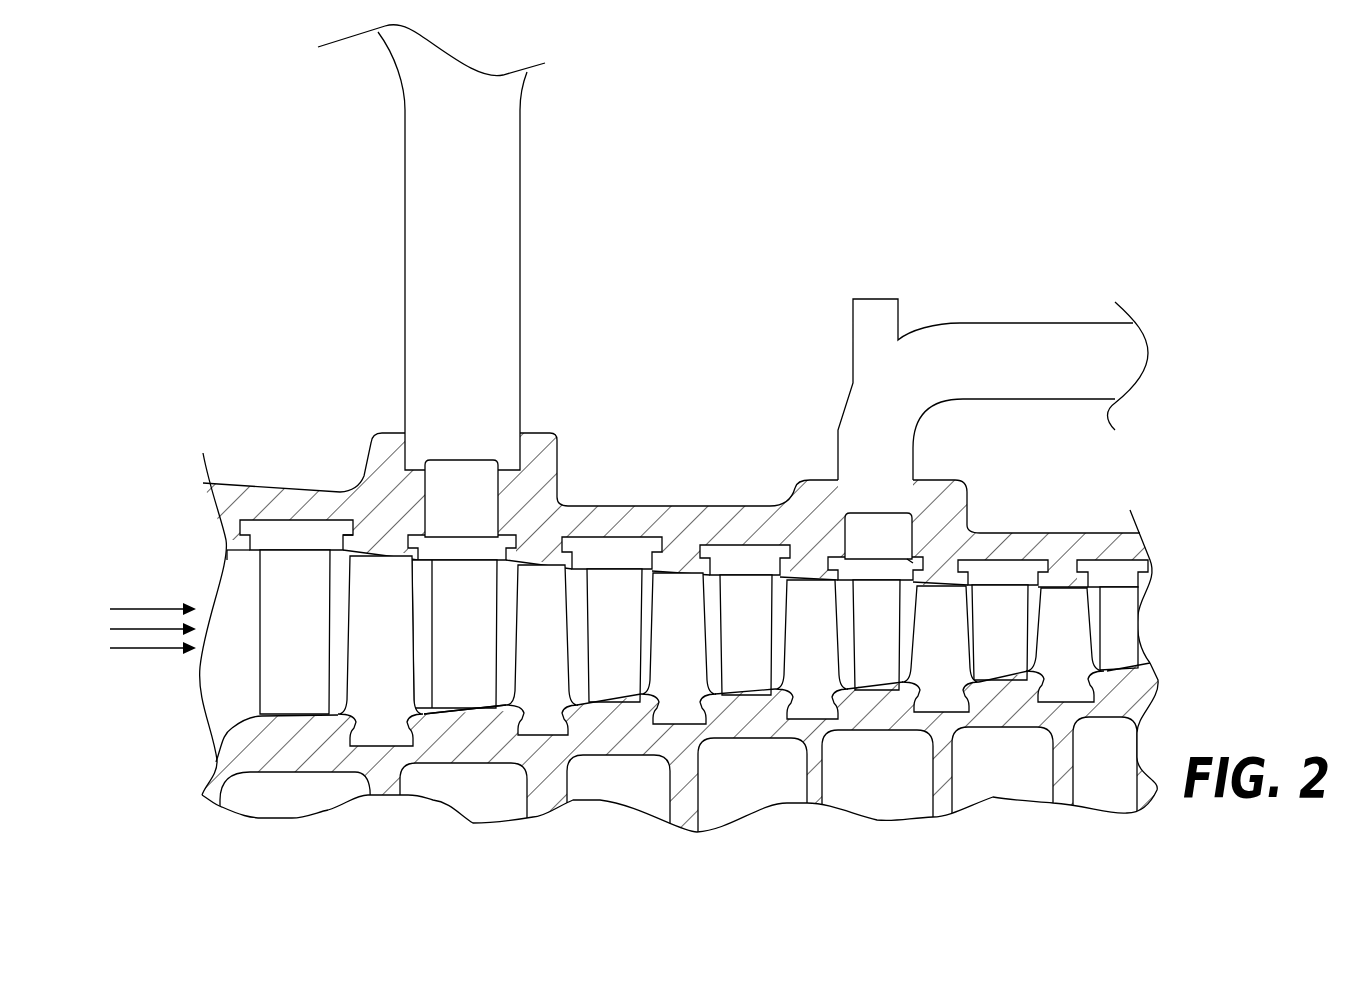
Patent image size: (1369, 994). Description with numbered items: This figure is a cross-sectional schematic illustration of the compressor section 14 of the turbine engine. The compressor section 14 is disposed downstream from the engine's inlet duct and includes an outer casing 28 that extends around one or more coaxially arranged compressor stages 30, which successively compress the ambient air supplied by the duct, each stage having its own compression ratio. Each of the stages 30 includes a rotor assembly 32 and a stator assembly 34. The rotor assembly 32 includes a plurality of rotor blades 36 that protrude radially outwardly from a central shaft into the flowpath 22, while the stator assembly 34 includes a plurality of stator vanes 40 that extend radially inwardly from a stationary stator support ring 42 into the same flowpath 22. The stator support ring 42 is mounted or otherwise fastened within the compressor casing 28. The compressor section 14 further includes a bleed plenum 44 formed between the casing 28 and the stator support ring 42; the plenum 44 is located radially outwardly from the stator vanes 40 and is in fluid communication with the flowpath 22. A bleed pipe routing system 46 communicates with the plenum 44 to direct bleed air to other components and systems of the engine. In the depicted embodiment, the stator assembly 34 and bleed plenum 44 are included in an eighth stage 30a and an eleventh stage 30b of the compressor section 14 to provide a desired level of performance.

The compressor section 14 is at (676, 306).
The flowpath 22 is at (140, 608).
The outer casing 28 is at (272, 508).
The compressor stages 30 is at (680, 781).
The eighth stage 30a is at (347, 832).
The eleventh stage 30b is at (901, 853).
The rotor assembly 32 is at (348, 726).
The stator assembly 34 is at (467, 711).
The rotor blades 36 is at (367, 650).
The stator vanes 40 is at (284, 623).
The stator support ring 42 is at (507, 537).
The bleed plenum 44 is at (447, 514).
The bleed pipe routing system 46 is at (520, 283).